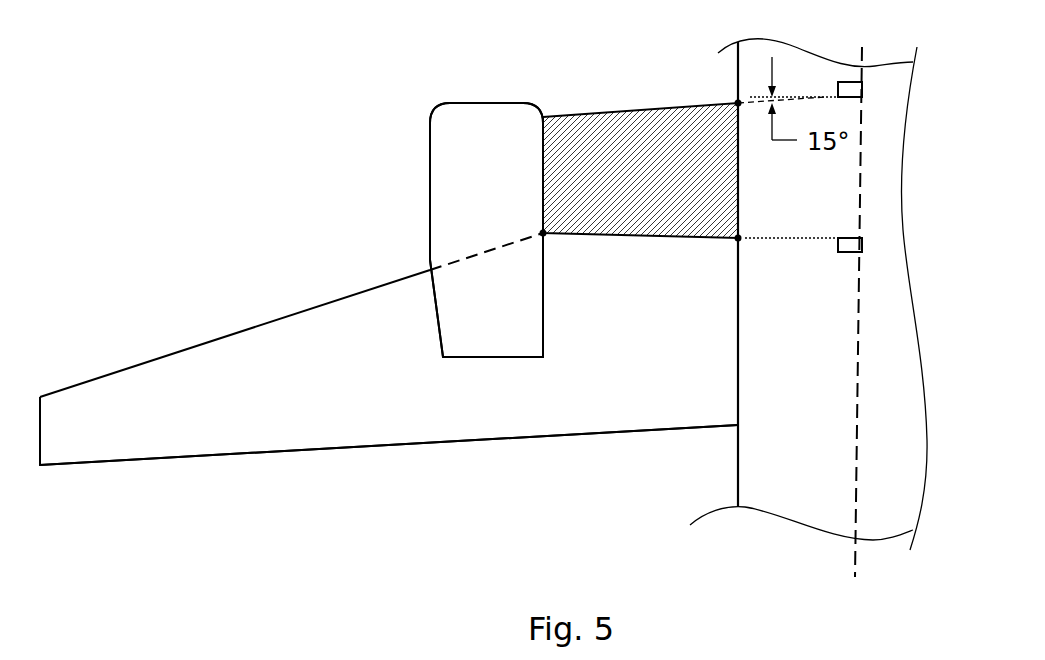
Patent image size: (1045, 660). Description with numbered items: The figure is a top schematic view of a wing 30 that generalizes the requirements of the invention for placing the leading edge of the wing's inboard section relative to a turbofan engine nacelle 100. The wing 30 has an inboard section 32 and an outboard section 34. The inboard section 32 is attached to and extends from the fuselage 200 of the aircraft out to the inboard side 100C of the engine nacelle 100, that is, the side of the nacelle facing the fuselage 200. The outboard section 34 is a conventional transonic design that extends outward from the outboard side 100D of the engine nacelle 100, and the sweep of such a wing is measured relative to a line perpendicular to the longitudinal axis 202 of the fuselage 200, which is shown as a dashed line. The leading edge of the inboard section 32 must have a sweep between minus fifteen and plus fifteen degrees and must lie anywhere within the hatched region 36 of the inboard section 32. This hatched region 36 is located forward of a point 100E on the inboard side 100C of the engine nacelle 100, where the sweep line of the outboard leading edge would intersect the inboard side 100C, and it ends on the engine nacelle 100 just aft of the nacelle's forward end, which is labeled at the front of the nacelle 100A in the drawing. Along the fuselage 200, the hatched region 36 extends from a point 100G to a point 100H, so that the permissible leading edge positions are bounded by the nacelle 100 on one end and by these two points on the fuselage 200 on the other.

The wing 30 is at (250, 249).
The inboard section 32 is at (389, 435).
The outboard section 34 is at (291, 370).
The hatched region 36 is at (668, 160).
The engine nacelle 100 is at (430, 221).
The seal top surface 100A is at (430, 74).
The inboard side 100C is at (551, 295).
The outboard side 100D is at (380, 240).
The point 100E is at (595, 260).
The point 100G is at (669, 279).
The point 100H is at (662, 61).
The fuselage 200 is at (757, 294).
The longitudinal axis 202 is at (788, 313).